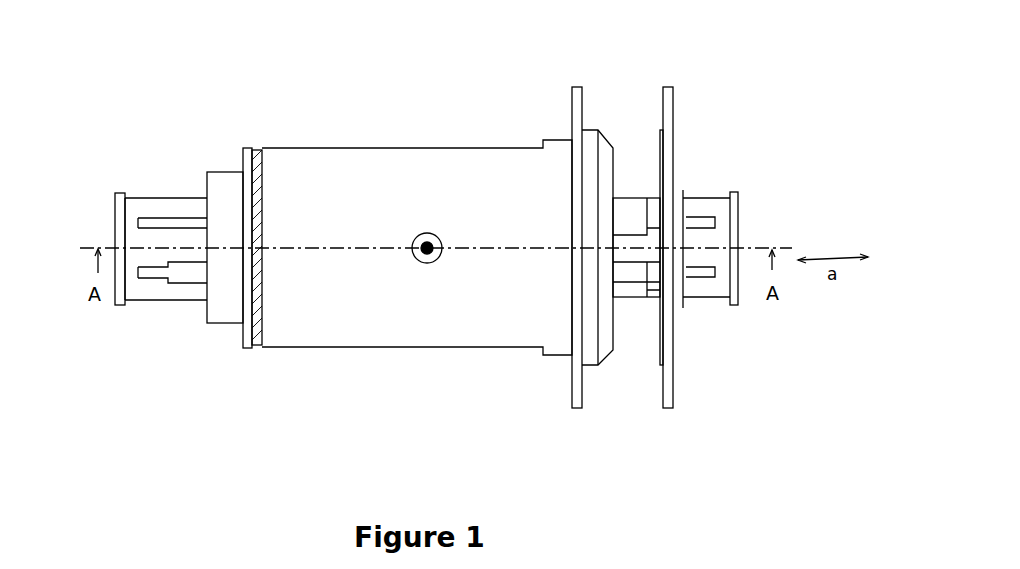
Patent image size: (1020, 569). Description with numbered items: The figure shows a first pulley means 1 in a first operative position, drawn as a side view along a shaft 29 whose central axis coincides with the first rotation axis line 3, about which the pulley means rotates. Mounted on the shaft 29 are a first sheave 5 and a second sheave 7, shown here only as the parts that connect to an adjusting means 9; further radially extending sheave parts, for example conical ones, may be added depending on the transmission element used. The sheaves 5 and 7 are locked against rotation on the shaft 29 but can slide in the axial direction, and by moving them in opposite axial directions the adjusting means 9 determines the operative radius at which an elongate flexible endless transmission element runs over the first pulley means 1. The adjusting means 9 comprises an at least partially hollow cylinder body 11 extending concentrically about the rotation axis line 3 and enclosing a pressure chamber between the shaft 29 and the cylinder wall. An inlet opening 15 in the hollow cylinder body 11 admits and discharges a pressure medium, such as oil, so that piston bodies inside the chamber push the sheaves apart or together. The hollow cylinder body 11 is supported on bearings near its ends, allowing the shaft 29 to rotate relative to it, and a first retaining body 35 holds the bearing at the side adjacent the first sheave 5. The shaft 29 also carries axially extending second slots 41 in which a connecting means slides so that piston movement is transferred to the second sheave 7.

The first pulley means 1 is at (215, 82).
The first rotation axis line 3 is at (98, 247).
The shaft 29 is at (142, 196).
The first retaining body 35 is at (213, 172).
The hollow cylinder body 11 is at (289, 147).
The adjusting means 9 is at (398, 122).
The inlet opening 15 is at (430, 262).
The first sheave 5 is at (576, 87).
The second slots 41 is at (637, 272).
The second sheave 7 is at (671, 87).